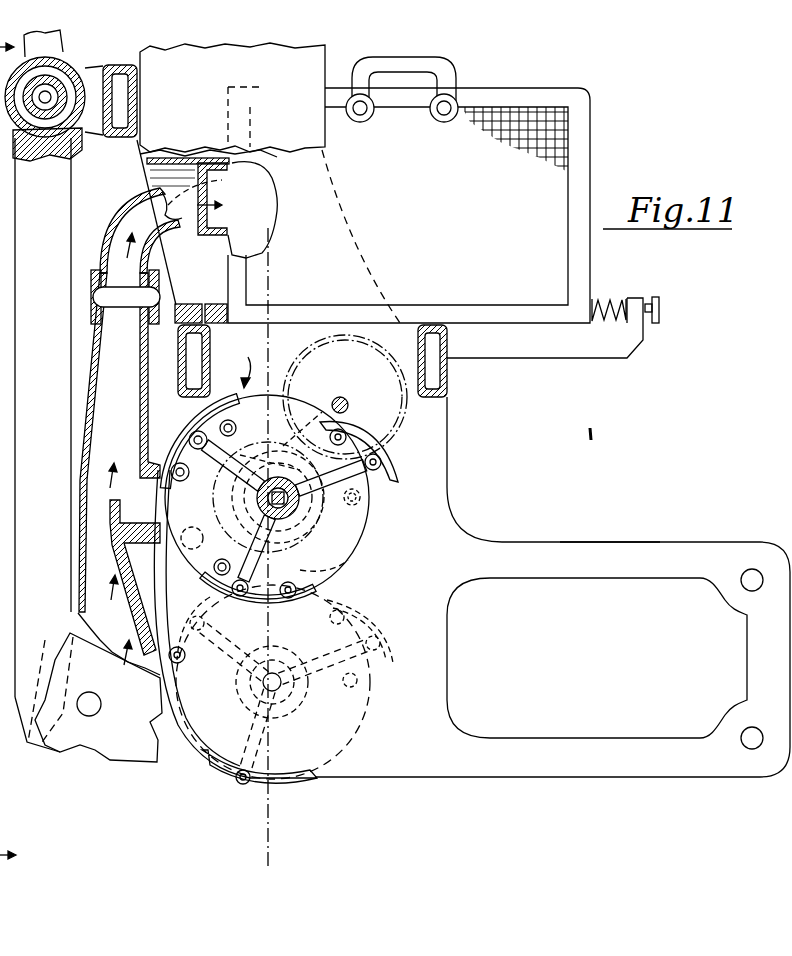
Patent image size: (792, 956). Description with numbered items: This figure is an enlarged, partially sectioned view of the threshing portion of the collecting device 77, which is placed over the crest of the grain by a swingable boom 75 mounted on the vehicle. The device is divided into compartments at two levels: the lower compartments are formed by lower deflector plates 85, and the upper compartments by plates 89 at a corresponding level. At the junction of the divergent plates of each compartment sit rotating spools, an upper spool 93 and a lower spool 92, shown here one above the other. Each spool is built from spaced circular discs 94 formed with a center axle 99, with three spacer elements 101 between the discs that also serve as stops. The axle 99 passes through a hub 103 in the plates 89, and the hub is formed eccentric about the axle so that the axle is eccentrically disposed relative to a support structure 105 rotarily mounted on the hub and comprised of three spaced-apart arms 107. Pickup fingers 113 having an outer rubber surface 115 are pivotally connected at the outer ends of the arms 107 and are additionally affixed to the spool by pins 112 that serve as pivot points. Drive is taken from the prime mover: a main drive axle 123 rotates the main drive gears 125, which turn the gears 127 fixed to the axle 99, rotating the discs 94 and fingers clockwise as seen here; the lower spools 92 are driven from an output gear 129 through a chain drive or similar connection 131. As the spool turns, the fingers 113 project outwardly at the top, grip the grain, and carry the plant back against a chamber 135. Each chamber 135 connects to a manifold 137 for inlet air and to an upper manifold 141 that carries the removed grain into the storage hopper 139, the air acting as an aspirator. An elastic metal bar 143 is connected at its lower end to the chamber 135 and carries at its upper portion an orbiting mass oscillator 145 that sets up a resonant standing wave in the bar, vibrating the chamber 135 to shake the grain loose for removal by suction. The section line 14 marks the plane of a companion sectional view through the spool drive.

The section line 14 is at (254, 262).
The swingable boom 75 is at (305, 62).
The collecting device 77 is at (660, 492).
The lower deflector plate 85 is at (608, 779).
The upper compartment plate 89 is at (607, 543).
The lower rotating spool 92 is at (188, 756).
The upper rotating spool 93 is at (243, 360).
The spool disc 94 is at (368, 548).
The center axle 99 is at (257, 498).
The spacer element 101 is at (355, 505).
The hub 103 is at (288, 506).
The support structure 105 is at (370, 484).
The arm 107 is at (250, 422).
The pin 112 is at (286, 456).
The pickup finger 113 is at (188, 449).
The rubber surface 115 is at (392, 456).
The main drive axle 123 is at (340, 396).
The main drive gear 125 is at (358, 368).
The gear 127 is at (292, 552).
The output gear 129 is at (283, 460).
The chain drive 131 is at (312, 574).
The chamber 135 is at (108, 373).
The manifold 137 is at (60, 757).
The storage hopper 139 is at (582, 118).
The upper manifold 141 is at (212, 176).
The elastic metal bar 143 is at (60, 206).
The orbiting mass oscillator 145 is at (68, 72).